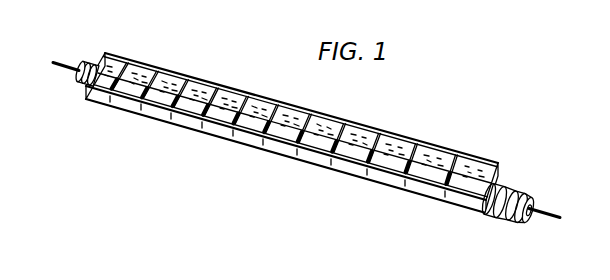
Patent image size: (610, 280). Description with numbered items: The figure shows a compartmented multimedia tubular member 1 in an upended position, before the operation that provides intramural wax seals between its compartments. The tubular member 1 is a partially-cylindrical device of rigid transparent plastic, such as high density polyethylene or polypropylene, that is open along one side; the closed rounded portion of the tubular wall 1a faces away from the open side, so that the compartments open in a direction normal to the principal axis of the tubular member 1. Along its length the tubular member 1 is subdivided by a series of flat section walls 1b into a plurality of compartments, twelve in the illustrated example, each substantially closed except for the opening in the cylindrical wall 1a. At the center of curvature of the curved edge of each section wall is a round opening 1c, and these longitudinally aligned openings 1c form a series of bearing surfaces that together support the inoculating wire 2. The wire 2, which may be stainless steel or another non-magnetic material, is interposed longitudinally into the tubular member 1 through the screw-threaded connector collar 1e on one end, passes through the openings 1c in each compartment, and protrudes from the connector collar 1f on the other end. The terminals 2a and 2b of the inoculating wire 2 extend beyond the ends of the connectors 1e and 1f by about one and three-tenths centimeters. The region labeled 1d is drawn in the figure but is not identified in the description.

The tubular member 1 is at (292, 133).
The cylindrical wall 1a is at (475, 157).
The section walls 1b is at (413, 152).
The round opening 1c is at (212, 112).
The compartment 1d is at (363, 143).
The screw-threaded connector collar 1e is at (77, 78).
The connector collar 1f is at (507, 218).
The inoculating wire 2 is at (192, 112).
The terminal 2a is at (68, 63).
The terminal 2b is at (542, 208).